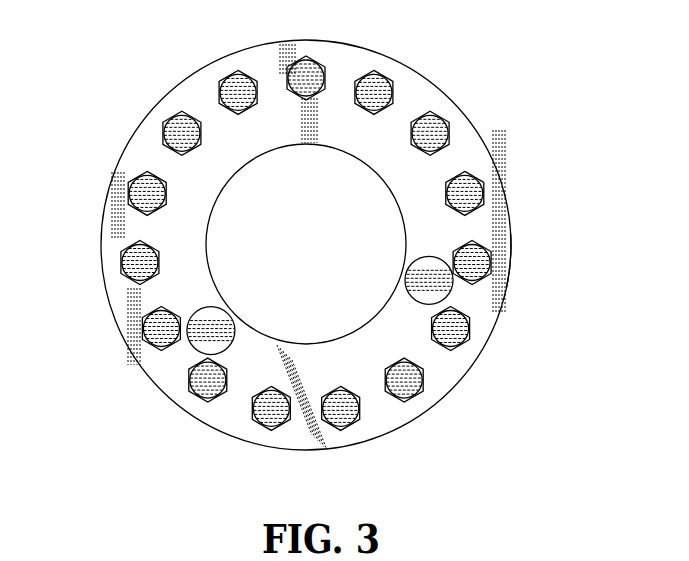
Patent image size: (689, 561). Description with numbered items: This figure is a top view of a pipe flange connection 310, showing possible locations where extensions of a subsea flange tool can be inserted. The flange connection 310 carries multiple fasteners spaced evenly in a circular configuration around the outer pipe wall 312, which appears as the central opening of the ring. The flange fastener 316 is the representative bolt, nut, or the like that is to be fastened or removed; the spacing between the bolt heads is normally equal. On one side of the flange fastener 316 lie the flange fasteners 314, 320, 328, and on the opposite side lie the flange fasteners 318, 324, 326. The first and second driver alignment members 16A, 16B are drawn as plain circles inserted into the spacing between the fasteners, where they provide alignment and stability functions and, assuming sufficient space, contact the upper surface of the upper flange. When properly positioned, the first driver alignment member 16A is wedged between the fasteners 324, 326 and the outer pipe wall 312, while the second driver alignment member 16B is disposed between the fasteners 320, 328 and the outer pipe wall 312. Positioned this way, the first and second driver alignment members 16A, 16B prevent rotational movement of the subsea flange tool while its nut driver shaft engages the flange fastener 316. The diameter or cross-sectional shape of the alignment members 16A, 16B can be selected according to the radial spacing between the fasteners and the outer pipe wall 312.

The flange connection 310 is at (188, 93).
The outer pipe wall 312 is at (213, 212).
The flange fastener 314 is at (268, 425).
The flange fastener 316 is at (343, 425).
The flange fastener 318 is at (417, 395).
The flange fastener 320 is at (205, 395).
The flange fastener 324 is at (458, 345).
The flange fastener 326 is at (502, 262).
The flange fastener 328 is at (147, 330).
The first driver alignment member 16A is at (445, 292).
The second driver alignment member 16B is at (202, 342).